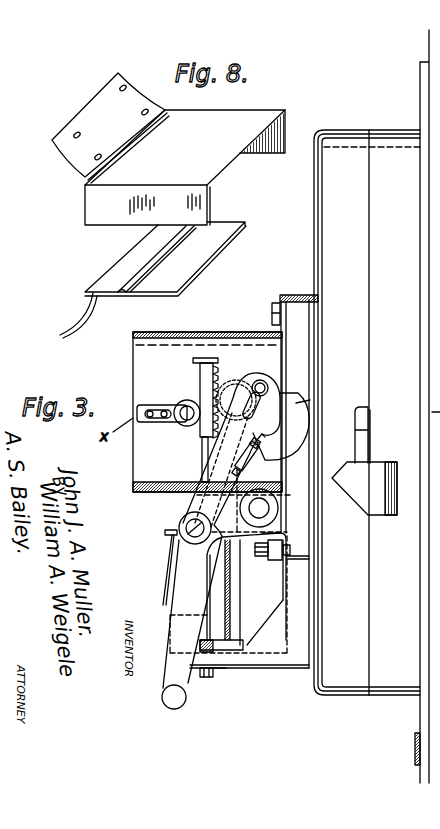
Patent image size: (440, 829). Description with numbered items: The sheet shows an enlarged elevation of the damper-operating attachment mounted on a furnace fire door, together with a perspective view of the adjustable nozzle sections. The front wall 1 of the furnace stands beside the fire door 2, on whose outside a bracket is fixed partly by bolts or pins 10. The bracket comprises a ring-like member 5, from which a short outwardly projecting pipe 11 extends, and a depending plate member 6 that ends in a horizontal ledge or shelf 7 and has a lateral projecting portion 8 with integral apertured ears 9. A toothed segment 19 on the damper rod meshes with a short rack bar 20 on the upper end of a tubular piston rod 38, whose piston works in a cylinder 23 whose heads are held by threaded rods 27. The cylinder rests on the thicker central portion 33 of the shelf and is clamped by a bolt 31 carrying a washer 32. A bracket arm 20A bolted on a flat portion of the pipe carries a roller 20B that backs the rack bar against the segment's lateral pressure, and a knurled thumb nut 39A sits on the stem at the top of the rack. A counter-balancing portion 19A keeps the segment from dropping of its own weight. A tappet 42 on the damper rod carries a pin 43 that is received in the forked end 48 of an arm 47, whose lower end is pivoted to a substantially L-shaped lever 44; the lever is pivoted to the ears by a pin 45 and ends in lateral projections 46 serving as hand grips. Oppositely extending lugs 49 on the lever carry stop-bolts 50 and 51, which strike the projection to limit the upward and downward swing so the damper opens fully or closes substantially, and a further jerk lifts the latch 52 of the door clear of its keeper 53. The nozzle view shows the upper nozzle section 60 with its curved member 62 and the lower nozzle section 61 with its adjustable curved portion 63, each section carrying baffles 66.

In FIG. 3, the front wall 1 is at (423, 45).
In FIG. 3, the fire door 2 is at (342, 130).
In FIG. 3, the ring-like member 5 is at (290, 295).
In FIG. 3, the depending plate member 6 is at (295, 574).
In FIG. 3, the ledge or shelf 7 is at (270, 668).
In FIG. 3, the lateral projecting portion 8 is at (295, 546).
In FIG. 3, the apertured ears 9 is at (266, 511).
In FIG. 3, the bolts or pins 10 is at (272, 311).
In FIG. 3, the outwardly projecting pipe 11 is at (142, 363).
In FIG. 3, the toothed segment 19 is at (236, 380).
In FIG. 3, the counter-balancing portion 19A is at (296, 403).
In FIG. 3, the rack bar 20 is at (200, 373).
In FIG. 3, the bracket arm 20A is at (158, 422).
In FIG. 3, the roller 20B is at (180, 404).
In FIG. 3, the cylinder 23 is at (170, 548).
In FIG. 3, the threaded rods 27 is at (208, 624).
In FIG. 3, the bolt 31 is at (205, 680).
In FIG. 3, the washer 32 is at (225, 670).
In FIG. 3, the central portion of the shelf 33 is at (241, 593).
In FIG. 3, the tubular piston rod 38 is at (200, 454).
In FIG. 3, the knurled thumb nut 39A is at (205, 357).
In FIG. 3, the tappet 42 is at (268, 384).
In FIG. 3, the pin 43 is at (275, 392).
In FIG. 3, the L-shaped lever 44 is at (190, 566).
In FIG. 3, the pin 45 is at (270, 504).
In FIG. 3, the lateral projections 46 is at (176, 706).
In FIG. 3, the arm 47 is at (187, 509).
In FIG. 3, the forked end 48 is at (253, 432).
In FIG. 3, the lugs 49 is at (197, 476).
In FIG. 3, the stop-bolt 50 is at (262, 465).
In FIG. 3, the stop-bolt 51 is at (254, 557).
In FIG. 3, the latch 52 is at (370, 449).
In FIG. 3, the keeper 53 is at (373, 503).
In FIG. 8, the upper nozzle section 60 is at (185, 167).
In FIG. 8, the lower nozzle section 61 is at (128, 256).
In FIG. 8, the curved member 62 is at (100, 96).
In FIG. 8, the curved portion 63 is at (70, 322).
In FIG. 8, the baffles 66 is at (141, 280).